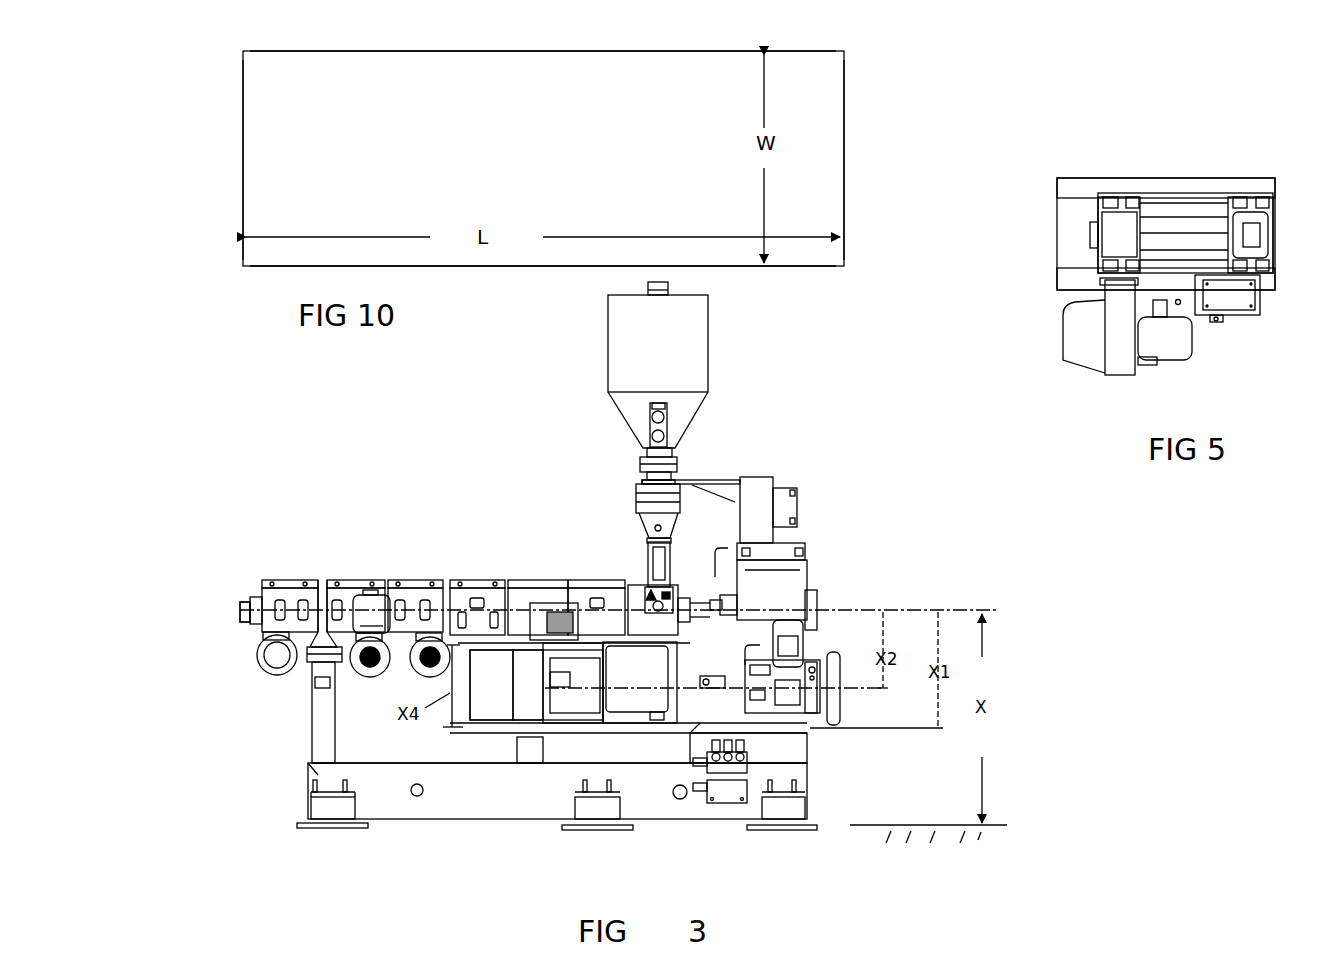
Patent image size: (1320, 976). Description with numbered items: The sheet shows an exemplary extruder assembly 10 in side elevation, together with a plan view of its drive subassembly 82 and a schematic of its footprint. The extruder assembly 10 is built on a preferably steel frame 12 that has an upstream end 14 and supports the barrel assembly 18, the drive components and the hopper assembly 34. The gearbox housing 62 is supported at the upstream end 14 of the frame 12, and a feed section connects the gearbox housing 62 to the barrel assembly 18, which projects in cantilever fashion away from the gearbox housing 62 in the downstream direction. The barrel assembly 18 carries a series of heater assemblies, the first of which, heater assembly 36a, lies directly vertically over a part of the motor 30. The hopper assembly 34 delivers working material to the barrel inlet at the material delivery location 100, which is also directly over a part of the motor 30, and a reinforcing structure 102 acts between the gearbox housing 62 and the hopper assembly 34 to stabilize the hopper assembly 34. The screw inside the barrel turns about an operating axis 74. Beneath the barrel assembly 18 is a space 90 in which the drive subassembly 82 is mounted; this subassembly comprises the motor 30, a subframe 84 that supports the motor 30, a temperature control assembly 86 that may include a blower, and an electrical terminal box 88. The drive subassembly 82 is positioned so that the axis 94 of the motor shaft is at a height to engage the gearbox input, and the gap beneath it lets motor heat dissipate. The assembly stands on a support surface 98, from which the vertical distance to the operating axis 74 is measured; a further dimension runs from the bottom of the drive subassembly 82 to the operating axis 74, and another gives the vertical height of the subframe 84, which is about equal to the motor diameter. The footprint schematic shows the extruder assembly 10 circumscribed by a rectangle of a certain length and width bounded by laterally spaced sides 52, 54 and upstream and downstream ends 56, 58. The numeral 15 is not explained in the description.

In FIG. 10, the extruder assembly 10 is at (545, 178).
In FIG. 3, the extruder assembly 10 is at (303, 528).
In FIG. 3, the frame 12 is at (440, 812).
In FIG. 3, the upstream end 14 is at (810, 753).
In FIG. 3, the mount 15 is at (458, 650).
In FIG. 3, the barrel assembly 18 is at (462, 595).
In FIG. 5, the motor 30 is at (1123, 233).
In FIG. 3, the hopper assembly 34 is at (732, 383).
In FIG. 3, the heater assembly 36a is at (578, 602).
In FIG. 10, the laterally spaced side 52 is at (508, 50).
In FIG. 10, the laterally spaced side 54 is at (492, 268).
In FIG. 3, the laterally spaced side 54 is at (497, 692).
In FIG. 10, the upstream end 56 is at (848, 151).
In FIG. 3, the upstream end 56 is at (842, 668).
In FIG. 10, the downstream end 58 is at (242, 157).
In FIG. 3, the downstream end 58 is at (238, 602).
In FIG. 3, the gearbox housing 62 is at (783, 582).
In FIG. 3, the operating axis 74 is at (687, 600).
In FIG. 5, the drive subassembly 82 is at (1212, 148).
In FIG. 3, the drive subassembly 82 is at (588, 712).
In FIG. 5, the subframe 84 is at (1070, 283).
In FIG. 5, the temperature control assembly 86 is at (1112, 338).
In FIG. 5, the electrical terminal box 88 is at (1230, 302).
In FIG. 3, the space 90 is at (625, 650).
In FIG. 3, the axis 94 is at (693, 680).
In FIG. 3, the support surface 98 is at (915, 826).
In FIG. 3, the material delivery location 100 is at (643, 568).
In FIG. 3, the reinforcing structure 102 is at (757, 465).